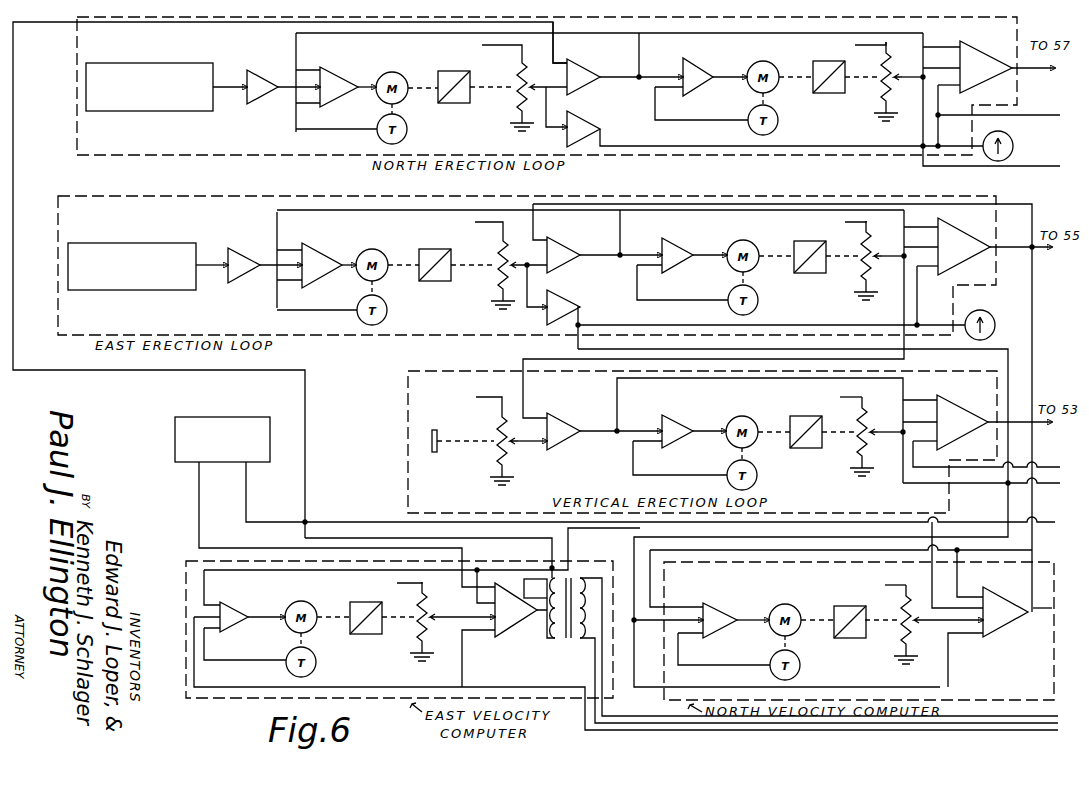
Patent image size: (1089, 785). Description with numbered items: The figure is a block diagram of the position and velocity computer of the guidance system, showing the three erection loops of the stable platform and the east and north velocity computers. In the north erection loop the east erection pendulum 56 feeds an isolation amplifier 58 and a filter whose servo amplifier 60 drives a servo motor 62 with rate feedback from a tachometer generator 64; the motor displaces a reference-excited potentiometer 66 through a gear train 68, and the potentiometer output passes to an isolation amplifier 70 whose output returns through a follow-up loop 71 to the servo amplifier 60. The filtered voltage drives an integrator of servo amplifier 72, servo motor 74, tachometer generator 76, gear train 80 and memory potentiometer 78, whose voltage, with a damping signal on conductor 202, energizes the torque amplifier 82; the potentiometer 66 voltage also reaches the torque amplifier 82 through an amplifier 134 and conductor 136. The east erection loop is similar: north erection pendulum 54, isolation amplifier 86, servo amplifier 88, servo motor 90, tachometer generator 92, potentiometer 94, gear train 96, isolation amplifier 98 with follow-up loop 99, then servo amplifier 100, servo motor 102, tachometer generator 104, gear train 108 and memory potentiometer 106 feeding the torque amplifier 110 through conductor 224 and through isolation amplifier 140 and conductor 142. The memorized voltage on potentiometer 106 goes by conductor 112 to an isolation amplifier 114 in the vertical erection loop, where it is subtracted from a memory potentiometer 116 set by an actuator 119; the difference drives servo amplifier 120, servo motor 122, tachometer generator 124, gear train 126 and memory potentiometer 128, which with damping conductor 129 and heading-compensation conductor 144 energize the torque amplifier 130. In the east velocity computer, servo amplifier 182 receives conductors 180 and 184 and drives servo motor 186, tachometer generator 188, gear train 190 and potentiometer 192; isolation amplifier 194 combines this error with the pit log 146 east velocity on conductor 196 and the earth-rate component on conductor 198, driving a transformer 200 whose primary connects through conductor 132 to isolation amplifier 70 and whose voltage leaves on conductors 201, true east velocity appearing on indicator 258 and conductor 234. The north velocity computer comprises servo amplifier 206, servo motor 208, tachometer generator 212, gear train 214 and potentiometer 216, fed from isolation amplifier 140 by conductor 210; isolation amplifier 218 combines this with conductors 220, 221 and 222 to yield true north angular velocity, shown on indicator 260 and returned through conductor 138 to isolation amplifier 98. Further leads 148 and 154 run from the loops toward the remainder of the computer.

The north erection pendulum 54 is at (102, 250).
The east erection pendulum 56 is at (120, 66).
The isolation amplifier 58 is at (272, 68).
The servo amplifier 60 is at (345, 70).
The servo motor 62 is at (392, 72).
The tachometer generator 64 is at (407, 131).
The potentiometer 66 is at (512, 92).
The gear train 68 is at (468, 71).
The isolation amplifier 70 is at (598, 65).
The follow-up loop 71 is at (560, 48).
The servo amplifier 72 is at (705, 62).
The servo motor 74 is at (765, 61).
The tachometer generator 76 is at (778, 118).
The memory potentiometer 78 is at (891, 60).
The gear train 80 is at (830, 93).
The torque amplifier 82 is at (1000, 45).
The isolation amplifier 86 is at (258, 232).
The servo amplifier 88 is at (312, 246).
The servo motor 90 is at (375, 249).
The tachometer generator 92 is at (387, 310).
The potentiometer 94 is at (498, 260).
The gear train 96 is at (440, 281).
The isolation amplifier 98 is at (577, 244).
The follow-up loop 99 is at (540, 215).
The servo amplifier 100 is at (696, 228).
The servo motor 102 is at (745, 240).
The tachometer generator 104 is at (758, 302).
The memory potentiometer 106 is at (870, 275).
The gear train 108 is at (812, 273).
The torque amplifier 110 is at (975, 226).
The conductor 112 is at (910, 364).
The isolation amplifier 114 is at (572, 418).
The memory potentiometer 116 is at (497, 446).
The actuator 119 is at (434, 428).
The servo amplifier 120 is at (682, 418).
The servo motor 122 is at (745, 416).
The tachometer generator 124 is at (757, 476).
The gear train 126 is at (808, 448).
The memory potentiometer 128 is at (866, 414).
The conductor 129 is at (670, 370).
The torque amplifier 130 is at (970, 402).
The conductor 132 is at (305, 494).
The amplifier 134 is at (590, 113).
The conductor 136 is at (680, 145).
The conductor 138 is at (696, 200).
The isolation amplifier 140 is at (568, 292).
The conductor 142 is at (675, 322).
The conductor 144 is at (1058, 458).
The pit log 146 is at (218, 417).
The lead 148 is at (1002, 168).
The lead 154 is at (1050, 490).
The conductor 180 is at (935, 735).
The servo amplifier 182 is at (240, 602).
The conductor 184 is at (1027, 522).
The servo motor 186 is at (303, 601).
The tachometer generator 188 is at (316, 663).
The gear train 190 is at (368, 634).
The potentiometer 192 is at (426, 600).
The isolation amplifier 194 is at (512, 622).
The conductor 196 is at (278, 548).
The conductor 198 is at (462, 655).
The transformer 200 is at (555, 640).
The conductors 201 is at (1035, 722).
The conductor 202 is at (700, 30).
The servo amplifier 206 is at (722, 603).
The servo motor 208 is at (787, 604).
The conductor 210 is at (1000, 352).
The tachometer generator 212 is at (770, 660).
The gear train 214 is at (845, 638).
The potentiometer 216 is at (900, 630).
The isolation amplifier 218 is at (1003, 620).
The conductor 220 is at (1025, 562).
The conductor 221 is at (932, 580).
The conductor 222 is at (952, 676).
The conductor 224 is at (790, 218).
The conductor 234 is at (1050, 105).
The indicator 258 is at (1010, 135).
The indicator 260 is at (985, 310).